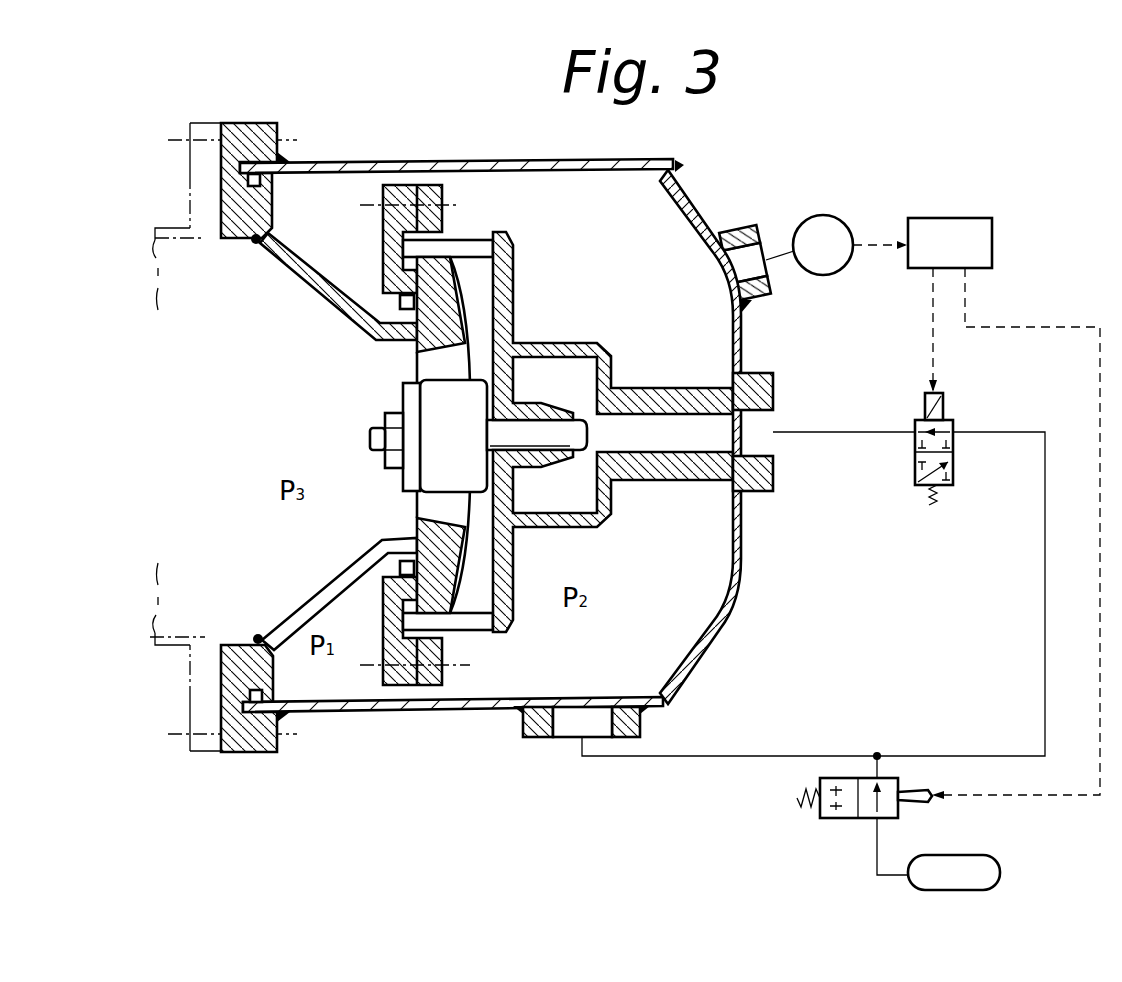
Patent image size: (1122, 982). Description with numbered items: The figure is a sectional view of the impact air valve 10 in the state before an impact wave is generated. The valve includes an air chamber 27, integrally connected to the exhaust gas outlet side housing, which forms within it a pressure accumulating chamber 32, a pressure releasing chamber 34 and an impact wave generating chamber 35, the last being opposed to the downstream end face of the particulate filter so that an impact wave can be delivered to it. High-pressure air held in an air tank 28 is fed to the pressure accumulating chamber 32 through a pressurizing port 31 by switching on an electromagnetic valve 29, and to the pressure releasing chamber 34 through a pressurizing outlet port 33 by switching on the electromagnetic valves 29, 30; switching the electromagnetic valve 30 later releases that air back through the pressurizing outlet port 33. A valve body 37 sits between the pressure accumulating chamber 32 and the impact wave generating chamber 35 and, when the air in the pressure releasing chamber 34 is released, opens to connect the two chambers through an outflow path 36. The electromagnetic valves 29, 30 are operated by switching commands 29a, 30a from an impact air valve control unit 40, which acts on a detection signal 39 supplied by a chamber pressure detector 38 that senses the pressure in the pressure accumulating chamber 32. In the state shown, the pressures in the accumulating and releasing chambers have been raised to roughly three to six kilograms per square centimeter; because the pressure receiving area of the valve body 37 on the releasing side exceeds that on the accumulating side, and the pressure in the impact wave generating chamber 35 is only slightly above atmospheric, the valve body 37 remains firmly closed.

The impact air valve 10 is at (375, 722).
The air chamber 27 is at (745, 588).
The air tank 28 is at (1000, 870).
The electromagnetic valve 29 is at (832, 820).
The switching command 29a is at (1048, 327).
The electromagnetic valve 30 is at (948, 492).
The switching command 30a is at (930, 306).
The pressurizing port 31 is at (570, 723).
The pressure accumulating chamber 32 is at (322, 692).
The pressurizing outlet port 33 is at (768, 440).
The pressure releasing chamber 34 is at (477, 618).
The impact wave generating chamber 35 is at (290, 308).
The outflow path 36 is at (387, 305).
The valve body 37 is at (452, 375).
The chamber pressure detector 38 is at (828, 215).
The detection signal 39 is at (877, 252).
The impact air valve control unit 40 is at (950, 218).